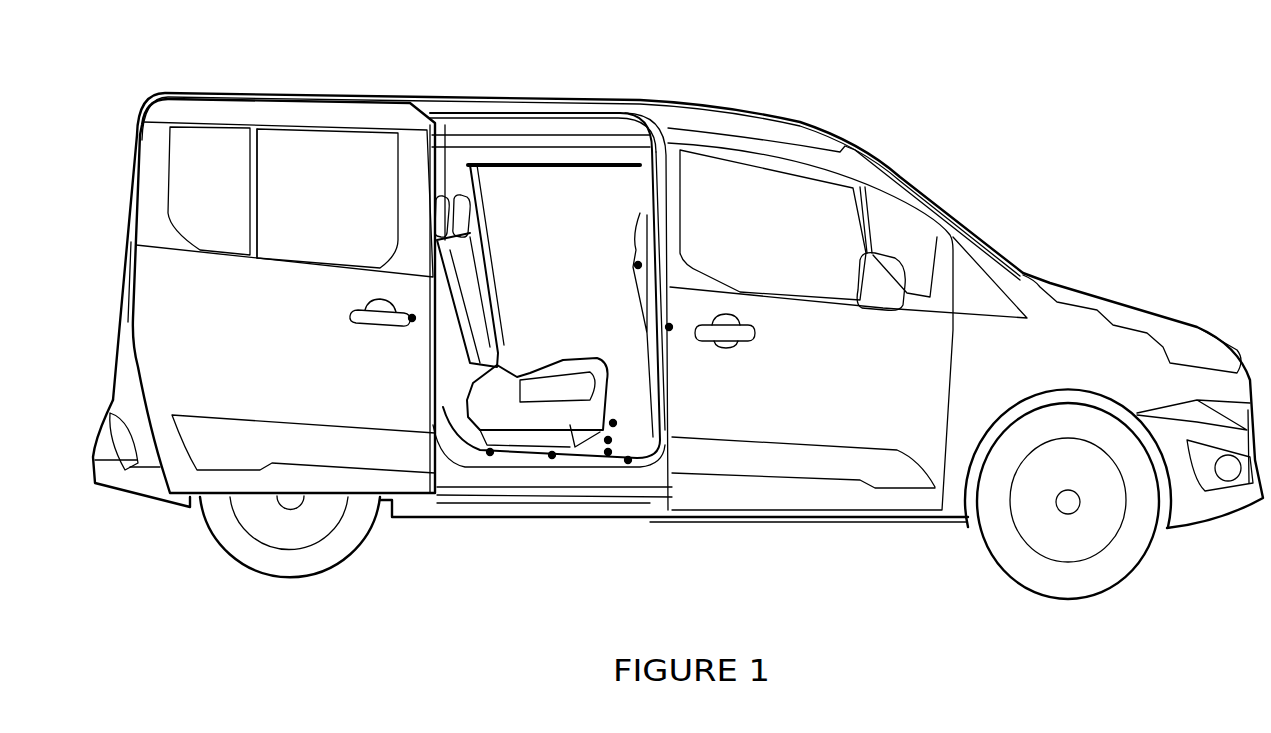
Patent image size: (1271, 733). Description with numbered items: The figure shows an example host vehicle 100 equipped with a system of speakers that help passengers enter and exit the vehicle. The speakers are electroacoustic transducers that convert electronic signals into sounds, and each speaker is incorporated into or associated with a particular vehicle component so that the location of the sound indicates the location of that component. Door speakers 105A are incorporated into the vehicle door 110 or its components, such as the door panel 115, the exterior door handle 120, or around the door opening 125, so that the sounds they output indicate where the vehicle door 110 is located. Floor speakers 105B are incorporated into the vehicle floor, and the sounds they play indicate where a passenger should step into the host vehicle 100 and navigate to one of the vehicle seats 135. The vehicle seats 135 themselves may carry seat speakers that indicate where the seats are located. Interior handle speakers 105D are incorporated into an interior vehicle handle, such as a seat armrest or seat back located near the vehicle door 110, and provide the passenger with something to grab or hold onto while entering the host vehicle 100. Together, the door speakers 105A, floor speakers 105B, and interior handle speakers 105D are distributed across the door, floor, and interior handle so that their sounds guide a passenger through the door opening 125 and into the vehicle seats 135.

The host vehicle 100 is at (770, 112).
The door speakers 105A is at (412, 320).
The floor speakers 105B is at (608, 440).
The interior handle speakers 105D is at (638, 265).
The vehicle door 110 is at (440, 177).
The door panel 115 is at (335, 97).
The exterior door handle 120 is at (370, 325).
The door opening 125 is at (560, 153).
The vehicle seats 135 is at (478, 262).